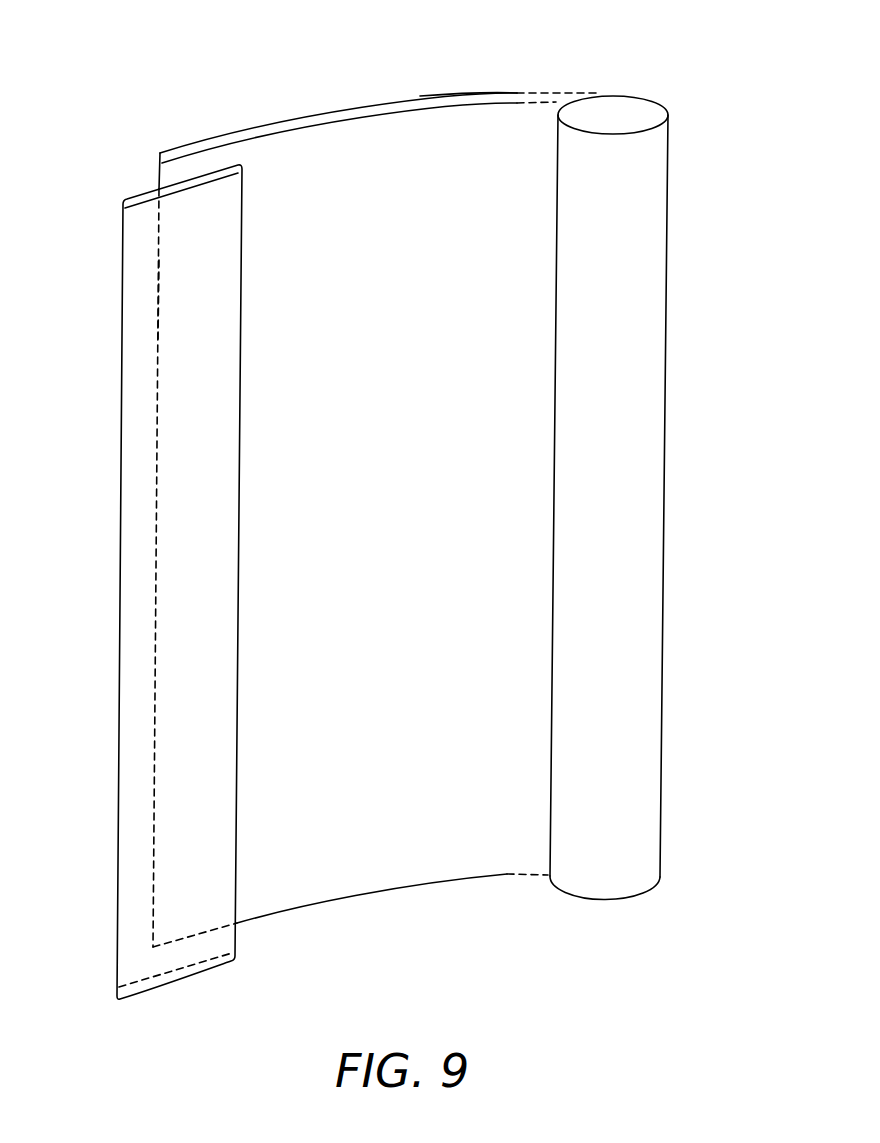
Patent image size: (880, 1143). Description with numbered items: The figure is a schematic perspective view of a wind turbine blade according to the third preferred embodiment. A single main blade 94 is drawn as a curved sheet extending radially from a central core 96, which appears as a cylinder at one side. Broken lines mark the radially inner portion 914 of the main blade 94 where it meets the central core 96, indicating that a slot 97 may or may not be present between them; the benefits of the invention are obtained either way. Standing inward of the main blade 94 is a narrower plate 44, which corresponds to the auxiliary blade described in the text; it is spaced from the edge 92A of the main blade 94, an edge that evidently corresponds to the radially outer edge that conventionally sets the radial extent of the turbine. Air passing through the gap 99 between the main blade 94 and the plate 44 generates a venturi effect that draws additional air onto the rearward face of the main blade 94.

The main blade 94 is at (318, 114).
The radially inner portion of the main blade 914 is at (500, 92).
The gap 99 is at (227, 153).
The hidden edge portion of sheet 92A is at (157, 303).
The panel 44 is at (225, 610).
The central core 96 is at (650, 600).
The slot 97 is at (530, 638).